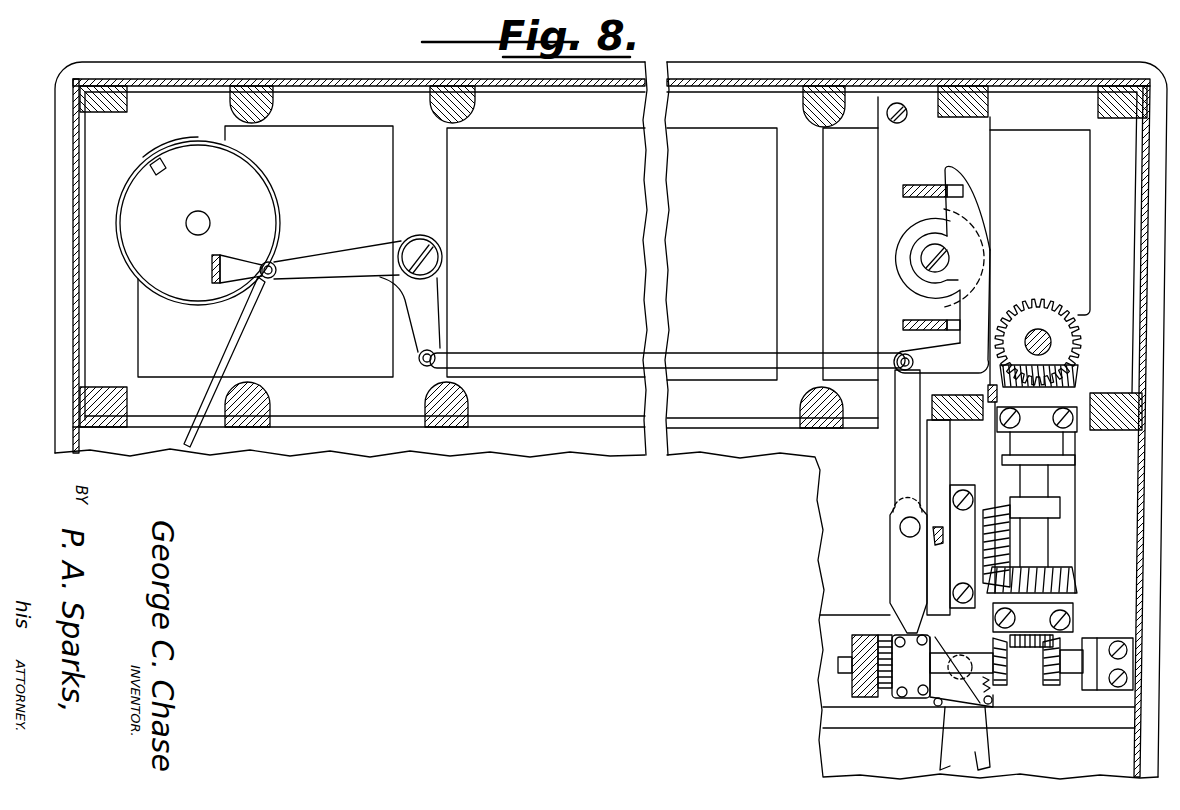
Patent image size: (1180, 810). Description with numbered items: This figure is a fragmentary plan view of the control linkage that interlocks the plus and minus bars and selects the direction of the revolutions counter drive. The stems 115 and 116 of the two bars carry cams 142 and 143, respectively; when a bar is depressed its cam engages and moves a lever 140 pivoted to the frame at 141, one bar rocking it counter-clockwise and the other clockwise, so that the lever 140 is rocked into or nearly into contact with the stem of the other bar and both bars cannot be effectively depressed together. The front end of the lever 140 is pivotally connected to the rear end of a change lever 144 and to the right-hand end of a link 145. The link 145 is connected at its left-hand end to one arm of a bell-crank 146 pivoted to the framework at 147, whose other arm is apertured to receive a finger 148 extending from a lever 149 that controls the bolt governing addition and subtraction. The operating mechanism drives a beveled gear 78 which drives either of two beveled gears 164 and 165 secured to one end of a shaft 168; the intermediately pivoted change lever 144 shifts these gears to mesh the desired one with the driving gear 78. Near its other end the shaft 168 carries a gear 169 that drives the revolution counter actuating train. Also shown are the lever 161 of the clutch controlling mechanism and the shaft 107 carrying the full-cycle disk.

The lever 149 is at (211, 269).
The finger 148 is at (262, 263).
The pivot 147 is at (443, 257).
The bell-crank 146 is at (432, 297).
The link 145 is at (738, 356).
The change lever 144 is at (897, 478).
The shaft 107 is at (941, 527).
The shaft 168 is at (939, 653).
The gear 169 is at (883, 690).
The beveled gear 165 is at (978, 735).
The beveled gear 164 is at (1053, 690).
The beveled gear 78 is at (1042, 635).
The lever 161 is at (985, 390).
The stem 115 is at (903, 325).
The cam 142 is at (953, 321).
The pivot 141 is at (927, 260).
The lever 140 is at (965, 213).
The cam 143 is at (955, 191).
The stem 116 is at (921, 185).